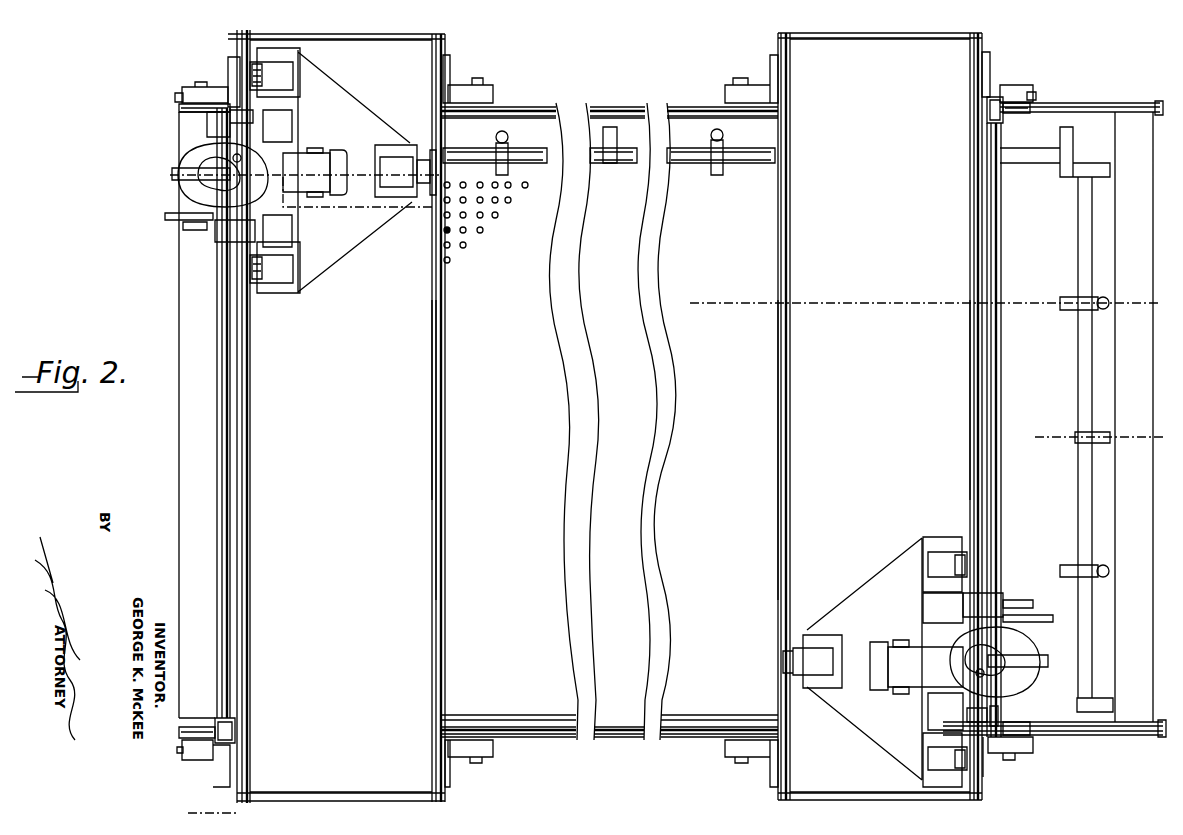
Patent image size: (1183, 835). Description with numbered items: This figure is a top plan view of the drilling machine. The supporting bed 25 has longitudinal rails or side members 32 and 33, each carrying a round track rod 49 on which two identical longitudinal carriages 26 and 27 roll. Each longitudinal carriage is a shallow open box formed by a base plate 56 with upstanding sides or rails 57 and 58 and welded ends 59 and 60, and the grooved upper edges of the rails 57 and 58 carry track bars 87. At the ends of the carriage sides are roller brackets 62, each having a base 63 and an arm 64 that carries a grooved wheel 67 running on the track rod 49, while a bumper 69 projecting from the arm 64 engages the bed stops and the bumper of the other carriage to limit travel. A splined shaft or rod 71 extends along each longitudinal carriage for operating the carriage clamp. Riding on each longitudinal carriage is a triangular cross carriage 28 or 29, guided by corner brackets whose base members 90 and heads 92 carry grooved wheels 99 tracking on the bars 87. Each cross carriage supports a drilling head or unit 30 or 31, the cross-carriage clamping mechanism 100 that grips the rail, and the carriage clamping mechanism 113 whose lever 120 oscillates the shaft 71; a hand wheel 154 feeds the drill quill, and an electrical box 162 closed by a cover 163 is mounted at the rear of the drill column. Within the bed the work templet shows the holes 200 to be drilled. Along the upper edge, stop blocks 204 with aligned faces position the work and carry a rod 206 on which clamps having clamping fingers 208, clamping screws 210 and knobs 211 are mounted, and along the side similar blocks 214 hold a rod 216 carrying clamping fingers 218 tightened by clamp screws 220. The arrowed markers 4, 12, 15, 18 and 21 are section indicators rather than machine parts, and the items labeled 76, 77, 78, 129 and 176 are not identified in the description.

The section line 4 is at (154, 167).
The section line 12 is at (703, 307).
The section line 15 is at (1046, 441).
The section line 18 is at (226, 681).
The section line 21 is at (211, 75).
The supporting bed 25 is at (180, 415).
The longitudinal carriage 26 is at (446, 432).
The longitudinal carriage 27 is at (778, 392).
The transverse carriage 28 is at (330, 250).
The transverse carriage 29 is at (880, 575).
The drilling head 30 is at (305, 153).
The drilling head 31 is at (905, 680).
The longitudinal rail 32 is at (546, 106).
The longitudinal rail 33 is at (558, 738).
The track rod 49 is at (692, 92).
The base plate 56 is at (668, 400).
The carriage side rail 57 is at (251, 527).
The carriage side rail 58 is at (432, 548).
The carriage end 59 is at (380, 40).
The carriage end 60 is at (376, 793).
The roller bracket 62 is at (205, 95).
The bracket base 63 is at (233, 57).
The bracket arm 64 is at (182, 103).
The grooved wheel 67 is at (183, 110).
The bumper 69 is at (176, 94).
The shaft 71 is at (236, 598).
The block 76 is at (988, 107).
The block 77 is at (236, 722).
The block 78 is at (236, 735).
The track bar 87 is at (250, 378).
The base member 90 is at (285, 55).
The bracket head 92 is at (268, 84).
The grooved wheel 99 is at (265, 72).
The clamping mechanism 100 is at (230, 128).
The carriage clamping mechanism 113 is at (220, 240).
The lever 120 is at (208, 232).
The cam ring 129 is at (282, 167).
The hand wheel 154 is at (185, 220).
The electrical box 162 is at (320, 150).
The cover 163 is at (340, 195).
The lever 176 is at (180, 185).
The holes 200 is at (480, 204).
The stop block 204 is at (1100, 444).
The clamp rod 206 is at (1086, 214).
The clamping finger 208 is at (722, 176).
The clamping screw 210 is at (1103, 310).
The knob 211 is at (1110, 568).
The side positioning block 214 is at (610, 163).
The side clamp rod 216 is at (540, 155).
The clamping finger 218 is at (509, 173).
The clamp screw 220 is at (711, 135).